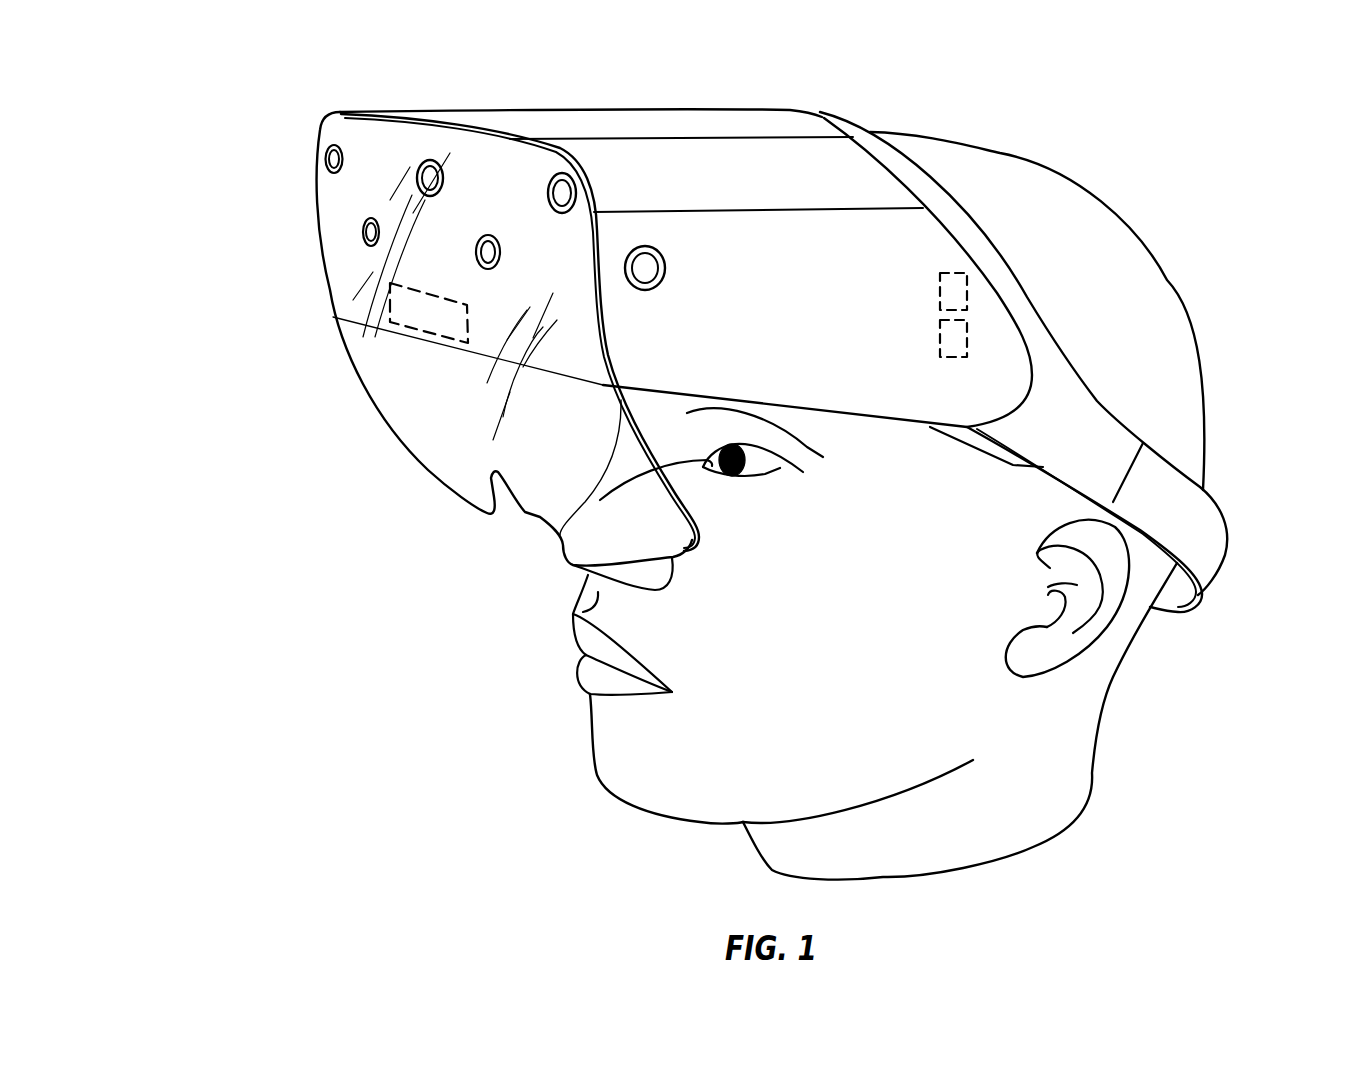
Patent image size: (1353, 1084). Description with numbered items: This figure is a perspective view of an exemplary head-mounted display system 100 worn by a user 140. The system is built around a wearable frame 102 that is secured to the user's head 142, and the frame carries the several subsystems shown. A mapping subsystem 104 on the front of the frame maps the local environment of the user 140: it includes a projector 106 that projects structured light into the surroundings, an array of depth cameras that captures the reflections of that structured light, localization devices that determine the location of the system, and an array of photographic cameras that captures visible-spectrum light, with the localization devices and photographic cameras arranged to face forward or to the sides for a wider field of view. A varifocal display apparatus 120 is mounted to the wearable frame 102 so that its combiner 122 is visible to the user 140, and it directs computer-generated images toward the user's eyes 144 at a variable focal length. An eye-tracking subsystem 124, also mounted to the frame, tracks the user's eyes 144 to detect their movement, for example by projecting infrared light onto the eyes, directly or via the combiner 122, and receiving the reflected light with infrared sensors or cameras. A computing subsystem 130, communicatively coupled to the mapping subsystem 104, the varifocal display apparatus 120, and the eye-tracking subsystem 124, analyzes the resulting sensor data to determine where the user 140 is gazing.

The head-mounted display system 100 is at (178, 140).
The wearable frame 102 is at (1217, 505).
The mapping subsystem 104 is at (335, 282).
The projector 106 is at (433, 162).
The varifocal display apparatus 120 is at (737, 112).
The combiner 122 is at (388, 424).
The eye-tracking subsystem 124 is at (388, 303).
The computing subsystem 130 is at (820, 118).
The user 140 is at (1097, 720).
The user's head 142 is at (1057, 170).
The user's eyes 144 is at (600, 500).